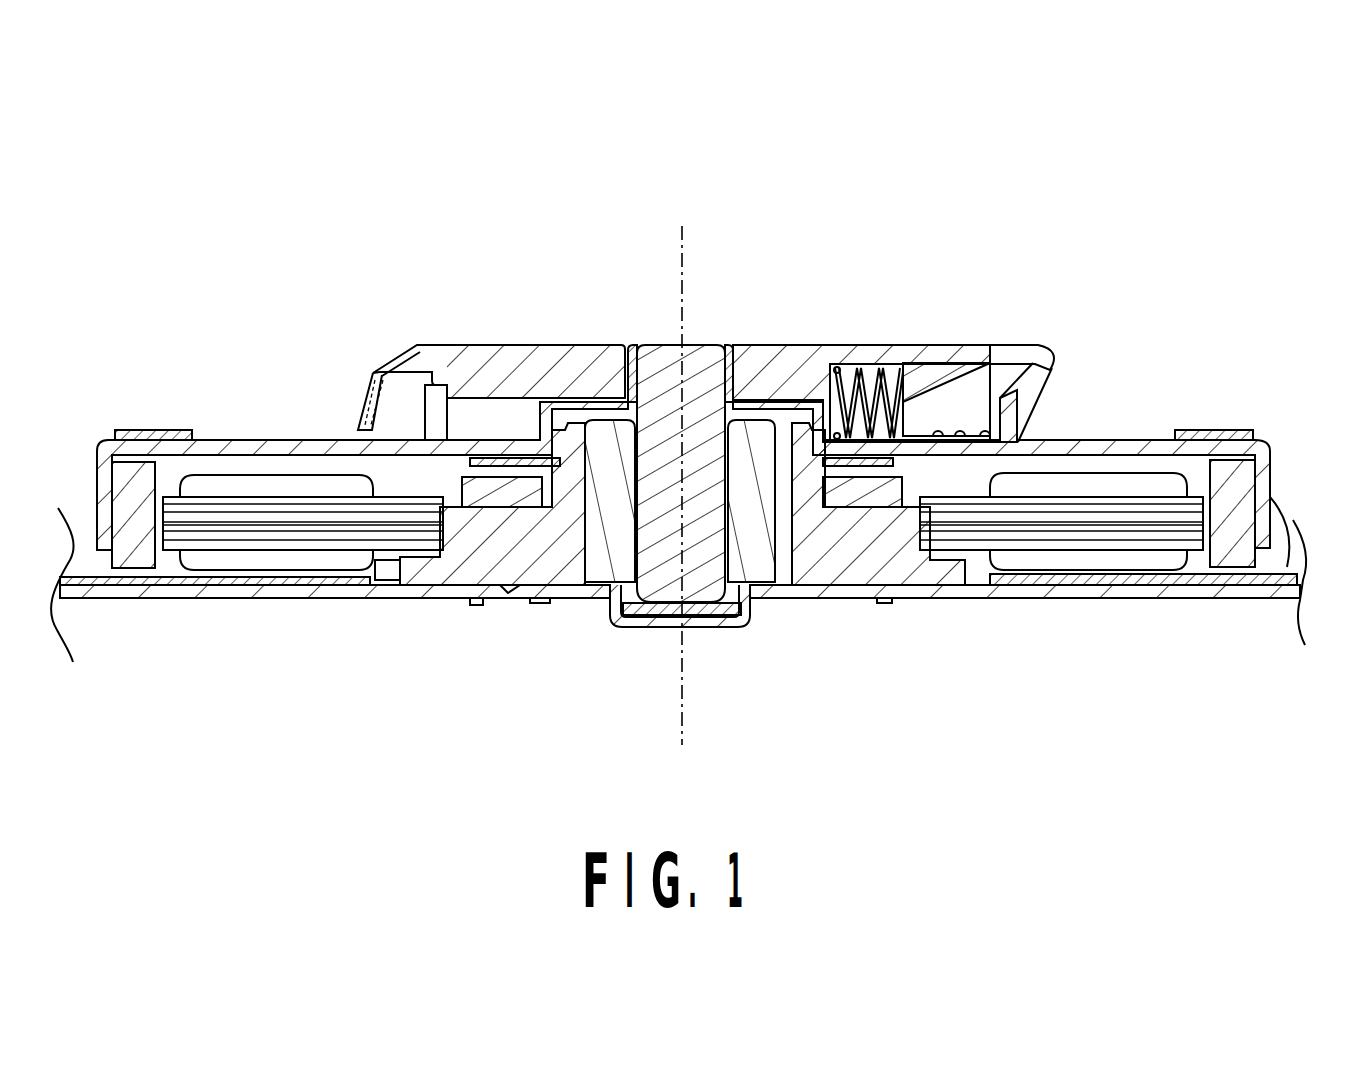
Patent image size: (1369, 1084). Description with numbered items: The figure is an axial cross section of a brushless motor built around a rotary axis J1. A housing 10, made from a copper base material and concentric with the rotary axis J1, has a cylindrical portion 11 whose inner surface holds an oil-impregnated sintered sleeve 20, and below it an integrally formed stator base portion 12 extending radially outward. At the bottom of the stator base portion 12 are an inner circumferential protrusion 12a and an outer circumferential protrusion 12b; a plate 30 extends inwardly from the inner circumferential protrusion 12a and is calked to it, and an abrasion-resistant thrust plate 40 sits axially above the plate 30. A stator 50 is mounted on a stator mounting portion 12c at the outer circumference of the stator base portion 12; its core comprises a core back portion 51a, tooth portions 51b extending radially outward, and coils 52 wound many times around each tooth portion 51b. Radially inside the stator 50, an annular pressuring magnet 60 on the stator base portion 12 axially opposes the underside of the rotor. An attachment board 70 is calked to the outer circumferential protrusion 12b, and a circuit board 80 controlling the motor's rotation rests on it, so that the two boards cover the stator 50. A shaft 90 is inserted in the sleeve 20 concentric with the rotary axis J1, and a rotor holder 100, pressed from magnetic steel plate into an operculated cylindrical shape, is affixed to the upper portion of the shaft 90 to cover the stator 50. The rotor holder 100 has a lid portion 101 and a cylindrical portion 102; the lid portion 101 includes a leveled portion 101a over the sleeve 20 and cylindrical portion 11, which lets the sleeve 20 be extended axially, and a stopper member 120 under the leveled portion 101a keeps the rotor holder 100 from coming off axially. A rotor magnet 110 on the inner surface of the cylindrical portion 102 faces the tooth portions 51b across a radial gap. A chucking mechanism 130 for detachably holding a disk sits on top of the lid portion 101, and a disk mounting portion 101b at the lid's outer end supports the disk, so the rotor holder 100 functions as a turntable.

The rotary axis J1 is at (681, 226).
The housing 10 is at (508, 594).
The cylindrical portion 11 is at (575, 490).
The stator base portion 12 is at (955, 565).
The inner circumferential protrusion 12a is at (819, 597).
The outer circumferential protrusion 12b is at (851, 586).
The stator mounting portion 12c is at (427, 555).
The sleeve 20 is at (607, 560).
The plate 30 is at (627, 630).
The thrust plate 40 is at (706, 629).
The stator 50 is at (287, 463).
The core back portion 51a is at (283, 450).
The tooth portions 51b is at (207, 527).
The coils 52 is at (240, 490).
The pressuring magnet 60 is at (470, 497).
The attachment board 70 is at (1070, 598).
The circuit board 80 is at (1168, 598).
The shaft 90 is at (663, 363).
The rotor holder 100 is at (1120, 438).
The lid portion 101 is at (1073, 440).
The leveled portion 101a is at (787, 350).
The disk mounting portion 101b is at (1228, 430).
The cylindrical portion 102 is at (1287, 567).
The rotor magnet 110 is at (123, 553).
The stopper member 120 is at (495, 397).
The chucking mechanism 130 is at (888, 343).